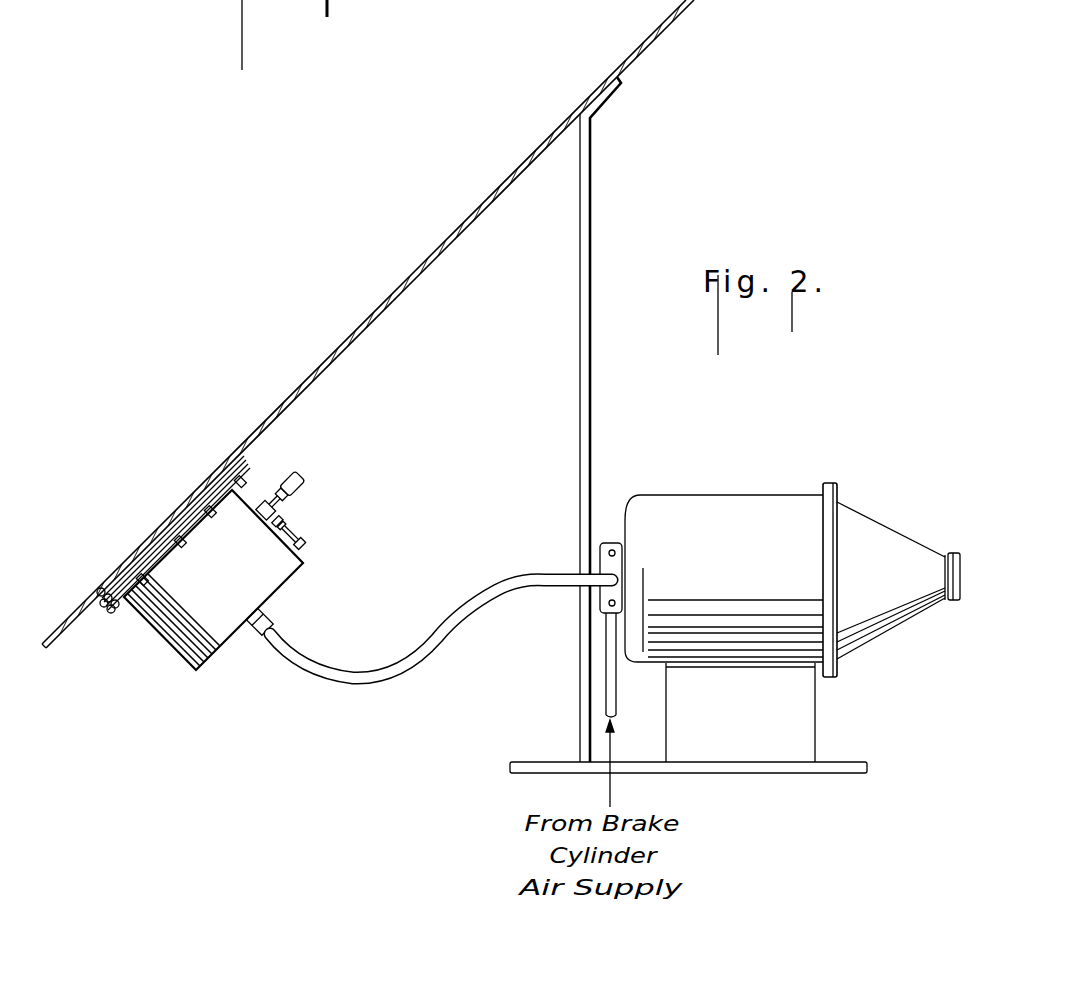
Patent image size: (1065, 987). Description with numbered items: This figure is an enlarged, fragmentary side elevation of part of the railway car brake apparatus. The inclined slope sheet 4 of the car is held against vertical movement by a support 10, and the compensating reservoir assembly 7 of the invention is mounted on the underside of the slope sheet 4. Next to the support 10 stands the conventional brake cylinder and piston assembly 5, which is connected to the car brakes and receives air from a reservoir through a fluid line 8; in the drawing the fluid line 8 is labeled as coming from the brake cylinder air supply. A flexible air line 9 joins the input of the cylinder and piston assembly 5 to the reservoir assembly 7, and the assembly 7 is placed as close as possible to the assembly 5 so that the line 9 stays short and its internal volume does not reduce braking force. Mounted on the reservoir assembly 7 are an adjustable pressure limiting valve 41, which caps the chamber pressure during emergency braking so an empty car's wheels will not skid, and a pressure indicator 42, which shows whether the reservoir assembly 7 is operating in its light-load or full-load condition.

The slope sheet 4 is at (427, 263).
The brake cylinder and piston assembly 5 is at (764, 491).
The compensating reservoir assembly 7 is at (310, 558).
The fluid line 8 is at (617, 693).
The air line 9 is at (415, 660).
The support 10 is at (590, 350).
The adjustable pressure limiting valve 41 is at (293, 522).
The pressure indicator 42 is at (303, 482).